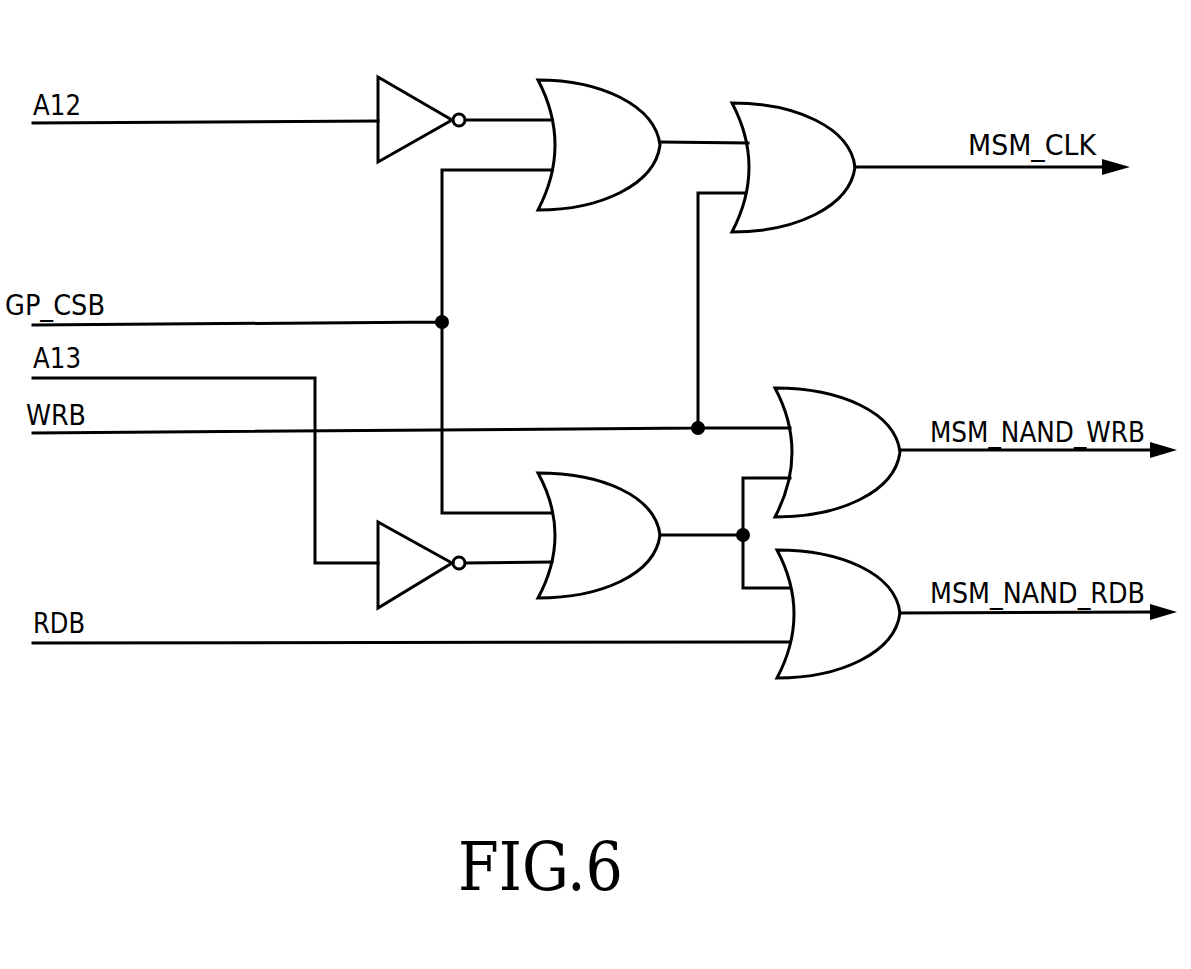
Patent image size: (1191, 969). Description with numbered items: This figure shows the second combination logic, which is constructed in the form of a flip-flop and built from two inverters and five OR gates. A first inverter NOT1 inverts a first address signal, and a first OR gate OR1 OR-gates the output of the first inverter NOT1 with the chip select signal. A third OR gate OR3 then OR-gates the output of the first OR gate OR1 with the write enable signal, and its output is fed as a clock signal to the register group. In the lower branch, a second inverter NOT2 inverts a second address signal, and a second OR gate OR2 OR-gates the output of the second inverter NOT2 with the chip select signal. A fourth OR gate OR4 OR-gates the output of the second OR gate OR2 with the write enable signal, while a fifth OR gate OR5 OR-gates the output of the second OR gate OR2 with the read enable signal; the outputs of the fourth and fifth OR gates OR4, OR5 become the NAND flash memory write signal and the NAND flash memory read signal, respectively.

The first inverter NOT1 is at (414, 93).
The second inverter NOT2 is at (414, 540).
The first OR gate OR1 is at (574, 82).
The second OR gate OR2 is at (600, 459).
The third OR gate OR3 is at (768, 104).
The fourth OR gate OR4 is at (813, 388).
The fifth OR gate OR5 is at (815, 678).